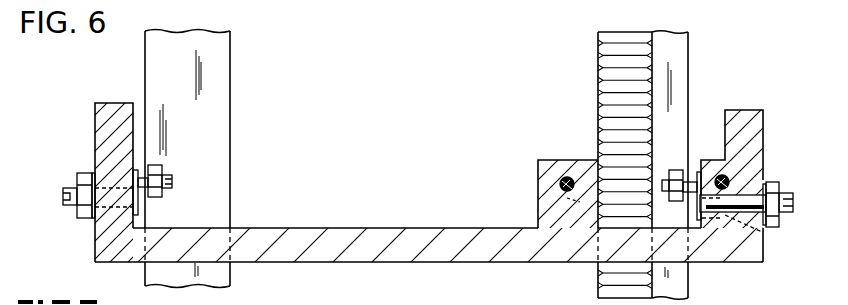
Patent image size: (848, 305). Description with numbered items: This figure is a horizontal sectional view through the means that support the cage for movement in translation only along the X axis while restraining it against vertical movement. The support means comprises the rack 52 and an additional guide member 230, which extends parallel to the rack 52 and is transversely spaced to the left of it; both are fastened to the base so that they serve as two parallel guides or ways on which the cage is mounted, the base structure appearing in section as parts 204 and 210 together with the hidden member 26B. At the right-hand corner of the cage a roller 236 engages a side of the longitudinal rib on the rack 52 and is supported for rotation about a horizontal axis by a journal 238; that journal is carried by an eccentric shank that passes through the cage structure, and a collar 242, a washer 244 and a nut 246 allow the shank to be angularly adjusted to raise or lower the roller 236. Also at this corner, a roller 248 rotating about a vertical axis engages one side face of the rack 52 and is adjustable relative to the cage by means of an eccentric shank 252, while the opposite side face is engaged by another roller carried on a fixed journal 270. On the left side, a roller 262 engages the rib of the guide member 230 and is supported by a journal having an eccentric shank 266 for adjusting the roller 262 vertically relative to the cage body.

The base plate 204 is at (388, 228).
The end plate 210 is at (95, 133).
The guide member 230 is at (231, 107).
The roller 262 is at (157, 197).
The eccentric shank 266 is at (108, 210).
The rack 52 is at (598, 77).
The roller 248 is at (585, 148).
The eccentric shank 252 is at (558, 183).
The roller 236 is at (675, 170).
The journal 238 is at (698, 200).
The collar 242 is at (698, 170).
The fixed journal 270 is at (729, 178).
The washer 244 is at (765, 180).
The nut 246 is at (771, 182).
The hidden member 26B is at (762, 229).